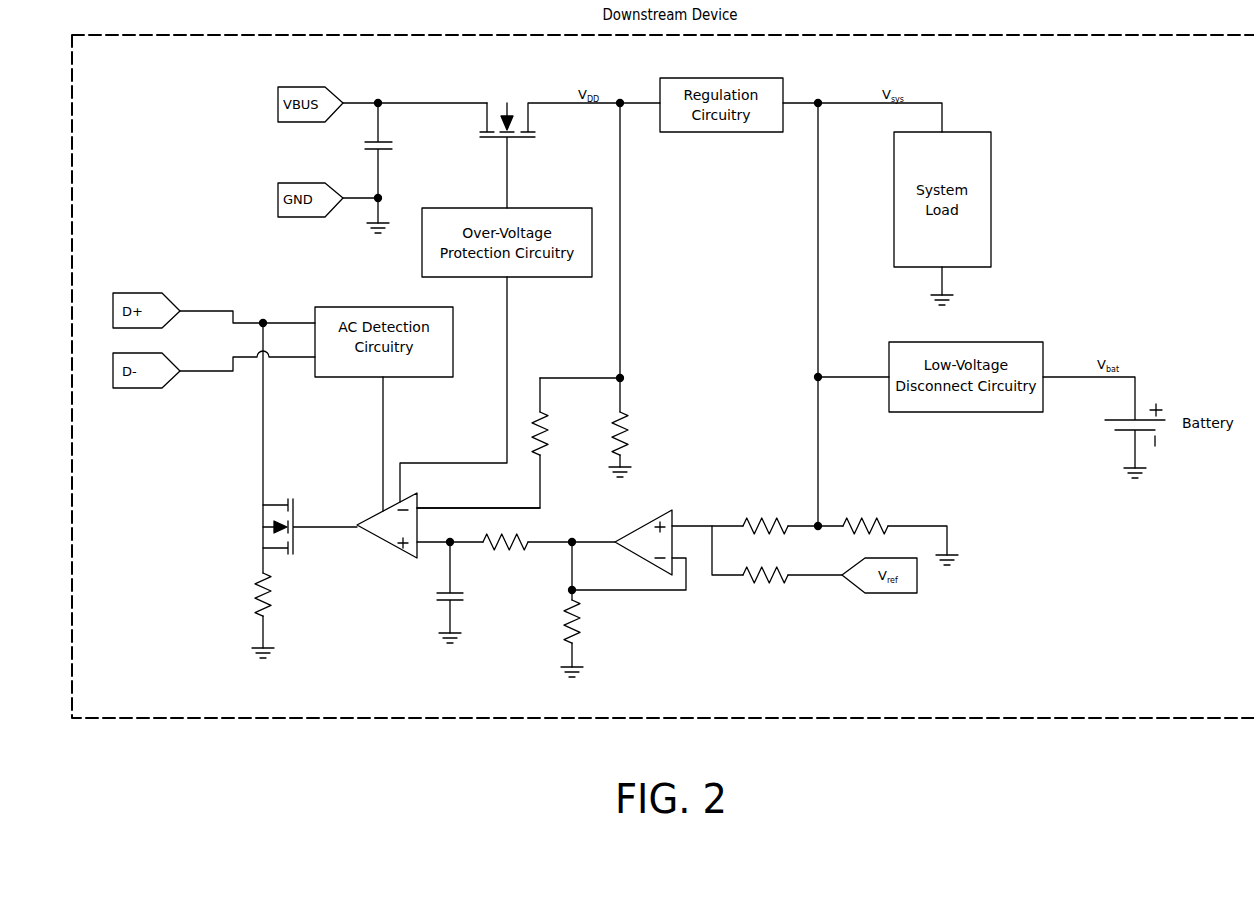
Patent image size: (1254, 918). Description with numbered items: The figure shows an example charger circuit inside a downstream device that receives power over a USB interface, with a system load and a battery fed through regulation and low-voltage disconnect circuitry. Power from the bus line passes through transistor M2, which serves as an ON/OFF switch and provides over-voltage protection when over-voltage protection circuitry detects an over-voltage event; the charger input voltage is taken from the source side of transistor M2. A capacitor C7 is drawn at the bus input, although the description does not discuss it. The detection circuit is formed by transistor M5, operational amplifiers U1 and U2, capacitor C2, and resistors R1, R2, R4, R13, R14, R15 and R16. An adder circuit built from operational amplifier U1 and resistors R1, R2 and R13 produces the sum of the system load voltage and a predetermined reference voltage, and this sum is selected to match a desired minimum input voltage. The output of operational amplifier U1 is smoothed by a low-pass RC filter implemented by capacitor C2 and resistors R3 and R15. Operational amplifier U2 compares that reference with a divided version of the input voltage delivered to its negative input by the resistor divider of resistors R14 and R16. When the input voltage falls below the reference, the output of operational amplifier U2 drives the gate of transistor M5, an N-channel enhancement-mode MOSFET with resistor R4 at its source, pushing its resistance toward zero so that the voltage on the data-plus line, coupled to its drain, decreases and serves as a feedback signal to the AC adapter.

The input capacitor C7 is at (363, 168).
The transistor M2 is at (550, 145).
The resistor R14 is at (500, 443).
The resistor R16 is at (636, 444).
The transistor M5 is at (294, 526).
The resistor R4 is at (273, 615).
The operational amplifier U2 is at (448, 528).
The capacitor C2 is at (461, 592).
The resistor R3 is at (549, 556).
The operational amplifier U1 is at (657, 550).
The resistor R1 is at (780, 519).
The resistor R13 is at (888, 534).
The resistor R2 is at (777, 567).
The resistor R15 is at (587, 633).